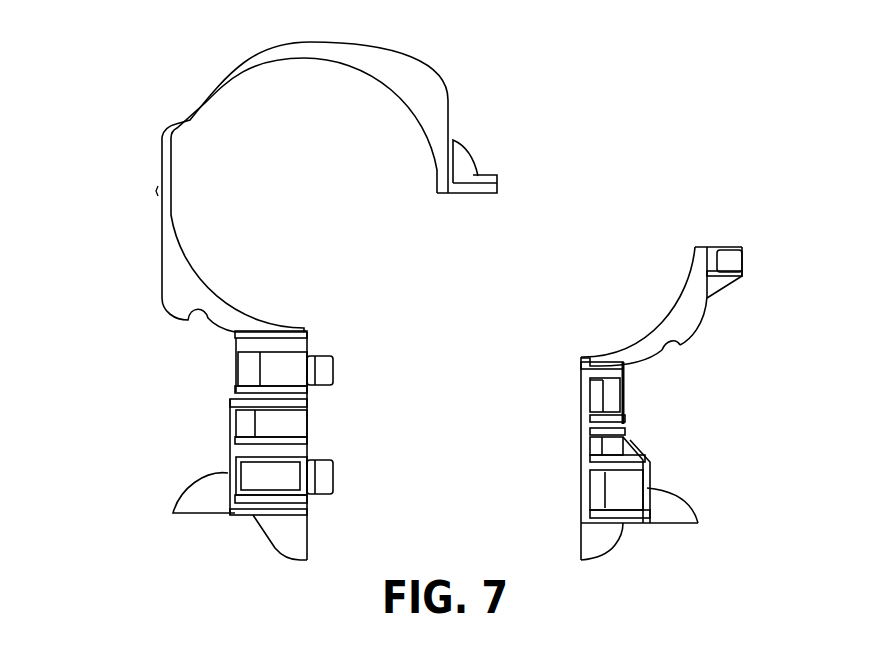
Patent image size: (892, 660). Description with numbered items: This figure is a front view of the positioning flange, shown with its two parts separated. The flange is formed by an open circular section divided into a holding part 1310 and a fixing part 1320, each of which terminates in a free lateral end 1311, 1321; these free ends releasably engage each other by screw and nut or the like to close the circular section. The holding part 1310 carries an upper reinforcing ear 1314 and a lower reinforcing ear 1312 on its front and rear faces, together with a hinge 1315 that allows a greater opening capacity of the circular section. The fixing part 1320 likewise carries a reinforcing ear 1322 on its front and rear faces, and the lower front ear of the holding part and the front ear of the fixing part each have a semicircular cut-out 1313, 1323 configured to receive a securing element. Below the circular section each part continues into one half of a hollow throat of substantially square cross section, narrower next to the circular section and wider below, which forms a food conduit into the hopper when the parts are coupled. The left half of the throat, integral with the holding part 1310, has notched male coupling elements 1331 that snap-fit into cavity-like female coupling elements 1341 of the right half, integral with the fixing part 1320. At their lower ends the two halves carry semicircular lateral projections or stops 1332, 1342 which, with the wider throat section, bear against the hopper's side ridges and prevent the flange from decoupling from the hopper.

The holding part 1310 is at (237, 63).
The free lateral end 1311 is at (478, 178).
The lower reinforcing ear 1312 is at (164, 272).
The semicircular cut-out 1313 is at (198, 320).
The upper reinforcing ear 1314 is at (424, 88).
The hinge 1315 is at (165, 125).
The fixing part 1320 is at (585, 355).
The free lateral end 1321 is at (730, 252).
The reinforcing ear 1322 is at (688, 318).
The semicircular cut-out 1323 is at (680, 350).
The notched male coupling element 1331 is at (325, 357).
The semicircular lateral projection 1332 is at (178, 488).
The female coupling element 1341 is at (593, 398).
The semicircular lateral projection 1342 is at (686, 516).